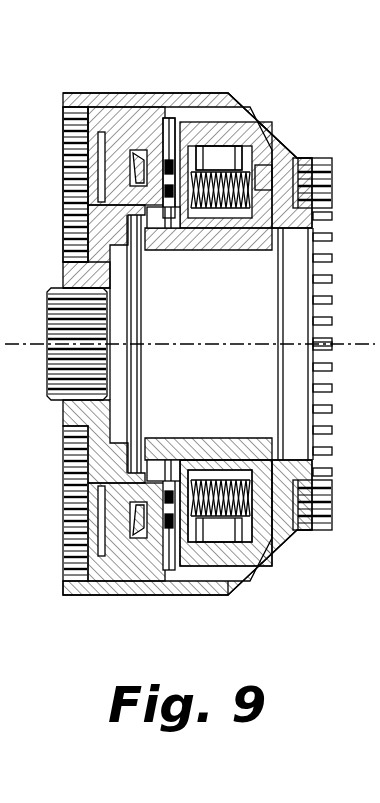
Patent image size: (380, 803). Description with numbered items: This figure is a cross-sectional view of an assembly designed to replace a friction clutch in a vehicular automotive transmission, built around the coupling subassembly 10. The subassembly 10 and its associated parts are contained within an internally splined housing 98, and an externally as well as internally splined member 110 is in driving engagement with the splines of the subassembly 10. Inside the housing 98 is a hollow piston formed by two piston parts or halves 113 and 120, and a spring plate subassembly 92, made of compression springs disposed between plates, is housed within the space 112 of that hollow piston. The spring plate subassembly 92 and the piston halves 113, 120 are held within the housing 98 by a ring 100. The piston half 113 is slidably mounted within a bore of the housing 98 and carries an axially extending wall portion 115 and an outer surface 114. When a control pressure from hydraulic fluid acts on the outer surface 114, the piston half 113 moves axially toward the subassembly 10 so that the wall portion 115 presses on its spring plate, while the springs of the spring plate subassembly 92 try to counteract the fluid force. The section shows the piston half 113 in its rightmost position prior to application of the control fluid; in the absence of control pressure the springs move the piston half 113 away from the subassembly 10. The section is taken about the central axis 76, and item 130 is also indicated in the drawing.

The assembly 10 is at (137, 600).
The central axis 76 is at (183, 343).
The spring plate subassembly 92 is at (223, 553).
The housing 98 is at (113, 88).
The ring 100 is at (75, 115).
The externally and internally splined member 110 is at (63, 273).
The space 112 is at (230, 125).
The piston half 113 is at (268, 163).
The outer surface 114 is at (265, 178).
The axially extending wall portion 115 is at (180, 108).
The piston half 120 is at (224, 550).
The return spring 130 is at (190, 462).